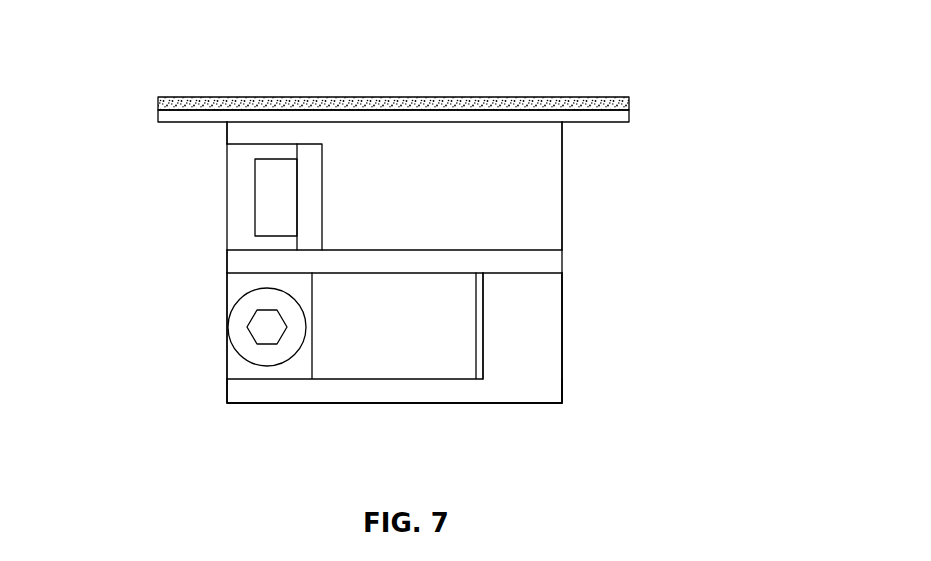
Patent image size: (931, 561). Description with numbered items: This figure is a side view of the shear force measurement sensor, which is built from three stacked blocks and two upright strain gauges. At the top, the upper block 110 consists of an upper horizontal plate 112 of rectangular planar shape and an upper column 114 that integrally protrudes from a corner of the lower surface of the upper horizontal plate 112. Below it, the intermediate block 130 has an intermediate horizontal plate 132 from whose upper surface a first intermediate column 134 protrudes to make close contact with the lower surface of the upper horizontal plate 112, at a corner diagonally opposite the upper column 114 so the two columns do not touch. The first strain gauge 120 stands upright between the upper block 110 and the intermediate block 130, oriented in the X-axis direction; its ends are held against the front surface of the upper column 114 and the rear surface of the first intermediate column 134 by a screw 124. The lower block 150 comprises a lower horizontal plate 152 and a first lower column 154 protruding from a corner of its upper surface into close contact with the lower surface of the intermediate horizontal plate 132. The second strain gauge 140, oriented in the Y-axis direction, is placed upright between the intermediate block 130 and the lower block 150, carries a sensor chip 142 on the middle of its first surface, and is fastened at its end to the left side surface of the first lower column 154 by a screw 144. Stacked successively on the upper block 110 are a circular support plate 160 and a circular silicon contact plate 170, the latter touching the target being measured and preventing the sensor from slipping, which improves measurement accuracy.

The upper block 110 is at (574, 180).
The upper horizontal plate 112 is at (235, 134).
The upper column 114 is at (535, 220).
The first strain gauge 120 is at (334, 181).
The screw 124 is at (262, 198).
The intermediate block 130 is at (574, 262).
The intermediate horizontal plate 132 is at (242, 262).
The first intermediate column 134 is at (242, 170).
The second strain gauge 140 is at (218, 360).
The sensor chip 142 is at (363, 353).
The screw 144 is at (242, 313).
The lower block 150 is at (574, 363).
The lower horizontal plate 152 is at (425, 393).
The first lower column 154 is at (540, 313).
The circular support plate 160 is at (622, 122).
The circular silicon contact plate 170 is at (613, 98).